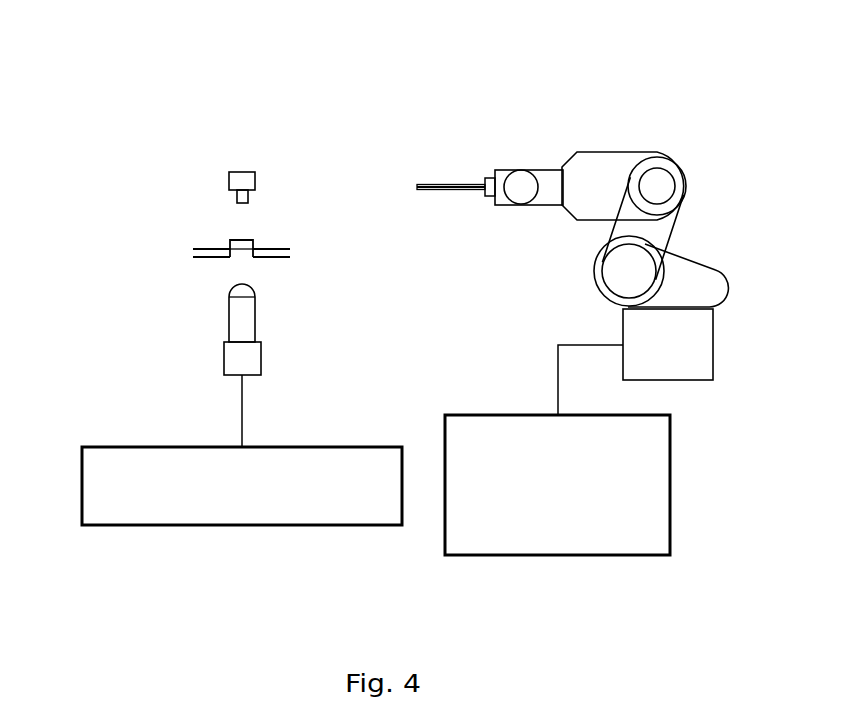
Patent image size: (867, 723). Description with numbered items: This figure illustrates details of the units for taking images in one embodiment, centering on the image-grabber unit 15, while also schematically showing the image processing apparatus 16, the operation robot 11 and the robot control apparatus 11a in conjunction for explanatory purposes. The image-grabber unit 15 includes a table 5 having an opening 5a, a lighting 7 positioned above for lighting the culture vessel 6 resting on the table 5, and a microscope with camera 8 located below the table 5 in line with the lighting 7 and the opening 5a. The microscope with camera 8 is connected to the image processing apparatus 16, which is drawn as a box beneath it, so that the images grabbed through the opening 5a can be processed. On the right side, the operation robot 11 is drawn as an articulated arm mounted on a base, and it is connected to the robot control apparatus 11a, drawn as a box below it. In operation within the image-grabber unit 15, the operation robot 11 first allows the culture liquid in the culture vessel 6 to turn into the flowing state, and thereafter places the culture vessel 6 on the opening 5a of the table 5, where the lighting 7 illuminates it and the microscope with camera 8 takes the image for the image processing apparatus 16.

The image-grabber unit 15 is at (138, 122).
The lighting 7 is at (241, 172).
The table 5 is at (273, 250).
The culture vessel 6 is at (227, 240).
The opening 5a is at (234, 256).
The microscope with camera 8 is at (257, 320).
The image processing apparatus 16 is at (242, 526).
The operation robot 11 is at (693, 188).
The robot control apparatus 11a is at (555, 556).